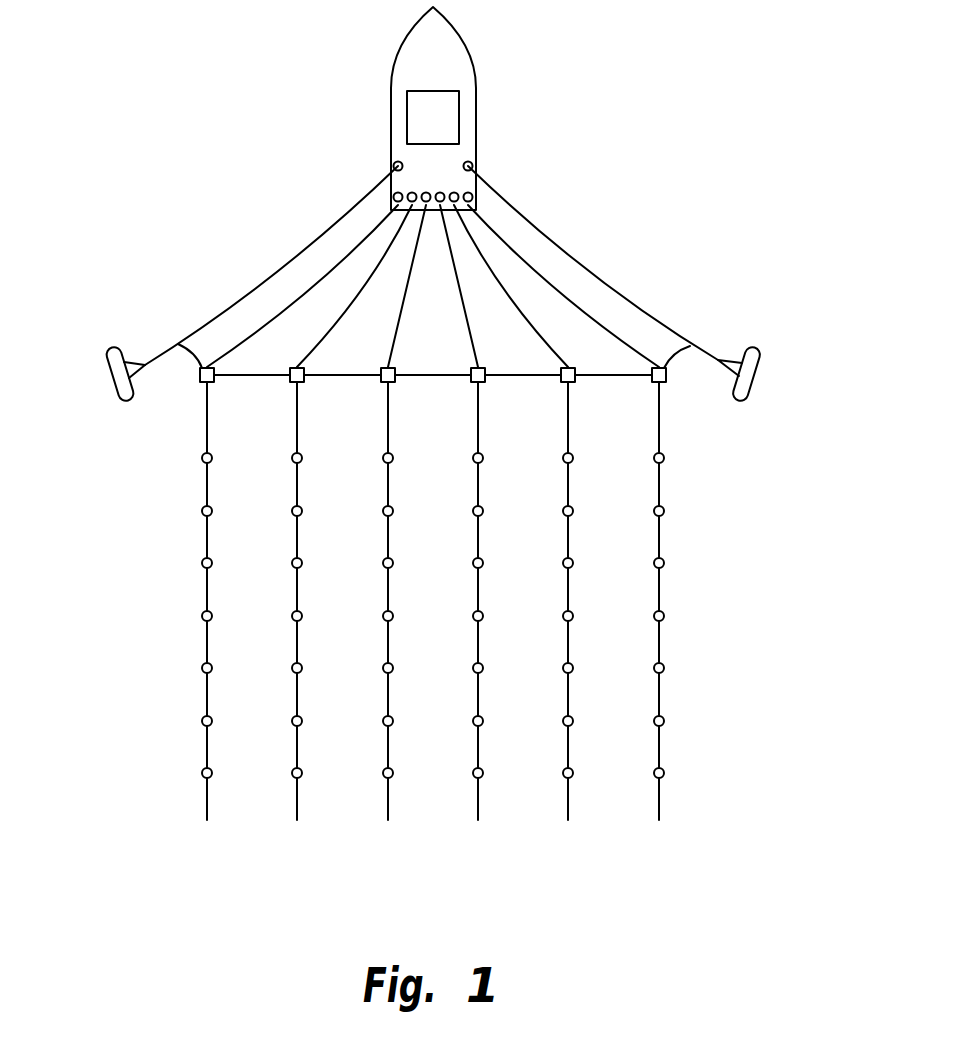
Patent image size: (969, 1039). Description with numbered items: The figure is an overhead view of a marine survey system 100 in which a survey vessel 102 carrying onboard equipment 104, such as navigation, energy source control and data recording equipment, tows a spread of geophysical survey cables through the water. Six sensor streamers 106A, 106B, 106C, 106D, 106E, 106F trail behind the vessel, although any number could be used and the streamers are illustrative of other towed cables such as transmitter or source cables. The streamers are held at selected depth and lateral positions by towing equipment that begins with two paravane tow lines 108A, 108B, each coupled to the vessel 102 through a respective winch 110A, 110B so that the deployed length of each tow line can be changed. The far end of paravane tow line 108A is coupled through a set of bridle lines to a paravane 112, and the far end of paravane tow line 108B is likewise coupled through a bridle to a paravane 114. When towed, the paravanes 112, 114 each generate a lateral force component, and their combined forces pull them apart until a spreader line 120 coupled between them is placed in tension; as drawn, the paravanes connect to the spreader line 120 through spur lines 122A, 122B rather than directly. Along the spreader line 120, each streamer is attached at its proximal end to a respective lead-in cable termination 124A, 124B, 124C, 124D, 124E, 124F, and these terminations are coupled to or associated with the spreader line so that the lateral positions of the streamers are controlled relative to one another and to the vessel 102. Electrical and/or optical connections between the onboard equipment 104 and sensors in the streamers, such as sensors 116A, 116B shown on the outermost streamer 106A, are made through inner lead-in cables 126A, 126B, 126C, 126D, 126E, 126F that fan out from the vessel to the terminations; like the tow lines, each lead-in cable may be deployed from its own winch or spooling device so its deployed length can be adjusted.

The marine survey system 100 is at (180, 141).
The survey vessel 102 is at (395, 60).
The onboard equipment 104 is at (434, 90).
The streamer 106A is at (163, 616).
The streamer 106B is at (296, 798).
The streamer 106C is at (387, 798).
The streamer 106D is at (479, 798).
The streamer 106E is at (569, 798).
The streamer 106F is at (660, 798).
The paravane tow line 108A is at (358, 203).
The paravane tow line 108B is at (508, 203).
The winch 110A is at (394, 162).
The winch 110B is at (472, 162).
The paravane 112 is at (110, 377).
The paravane 114 is at (758, 375).
The sensor 116A is at (201, 460).
The sensor 116B is at (201, 513).
The spreader line 120 is at (418, 385).
The spur line 122A is at (189, 360).
The spur line 122B is at (677, 360).
The lead-in cable termination 124A is at (198, 384).
The lead-in cable termination 124B is at (288, 384).
The lead-in cable termination 124C is at (380, 384).
The lead-in cable termination 124D is at (486, 384).
The lead-in cable termination 124E is at (576, 384).
The lead-in cable termination 124F is at (667, 384).
The inner lead-in cable 126A is at (365, 240).
The inner lead-in cable 126B is at (372, 277).
The inner lead-in cable 126C is at (398, 337).
The inner lead-in cable 126D is at (472, 337).
The inner lead-in cable 126E is at (497, 277).
The inner lead-in cable 126F is at (503, 238).